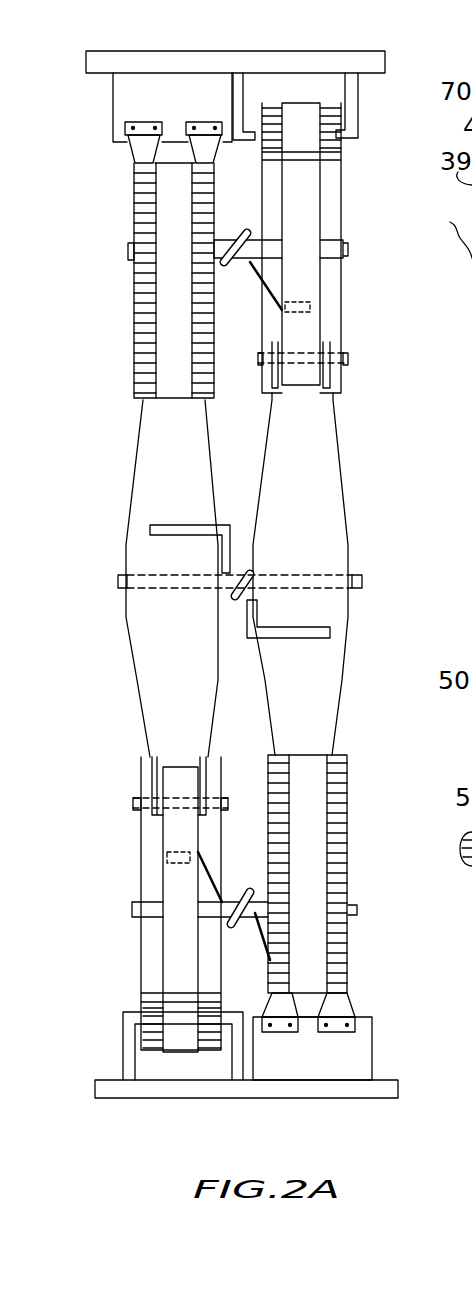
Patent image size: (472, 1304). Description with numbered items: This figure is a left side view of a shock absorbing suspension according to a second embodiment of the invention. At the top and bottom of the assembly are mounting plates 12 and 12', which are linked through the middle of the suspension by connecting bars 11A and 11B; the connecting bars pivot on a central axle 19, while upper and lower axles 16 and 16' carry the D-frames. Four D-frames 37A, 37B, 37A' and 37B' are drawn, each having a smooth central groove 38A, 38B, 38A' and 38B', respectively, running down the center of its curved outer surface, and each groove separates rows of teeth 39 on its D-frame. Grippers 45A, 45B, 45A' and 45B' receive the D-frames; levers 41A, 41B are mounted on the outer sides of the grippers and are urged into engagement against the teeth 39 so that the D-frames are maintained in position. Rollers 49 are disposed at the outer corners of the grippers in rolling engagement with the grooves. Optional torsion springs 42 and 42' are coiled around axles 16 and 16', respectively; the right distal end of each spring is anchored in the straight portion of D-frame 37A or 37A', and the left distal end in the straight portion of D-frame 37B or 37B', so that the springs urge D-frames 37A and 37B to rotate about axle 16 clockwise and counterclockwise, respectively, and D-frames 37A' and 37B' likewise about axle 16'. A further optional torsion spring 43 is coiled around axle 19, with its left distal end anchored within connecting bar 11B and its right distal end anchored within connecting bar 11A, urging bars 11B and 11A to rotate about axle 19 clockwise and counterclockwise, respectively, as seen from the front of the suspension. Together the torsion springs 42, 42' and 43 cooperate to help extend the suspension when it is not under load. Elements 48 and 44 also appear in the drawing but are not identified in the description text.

The mounting plate 12 is at (247, 41).
The mounting plate 12' is at (266, 1102).
The roller 49 is at (176, 140).
The teeth 39 is at (268, 100).
The smooth central groove 38A is at (320, 197).
The smooth central groove 38A' is at (365, 864).
The smooth central groove 38B is at (116, 284).
The smooth central groove 38B' is at (120, 909).
The gripper 45A is at (329, 106).
The gripper 45A' is at (351, 1036).
The gripper 45B is at (136, 107).
The gripper 45B' is at (143, 1046).
The mounting pads 48 is at (123, 127).
The lever 41A is at (197, 150).
The lever 41B is at (140, 148).
The torsion spring 42 is at (267, 235).
The torsion spring 42' is at (218, 897).
The D-frame 37A is at (344, 248).
The D-frame 37A' is at (357, 874).
The D-frame 37B is at (127, 280).
The D-frame 37B' is at (132, 903).
The axle 16 is at (311, 243).
The axle 16' is at (279, 908).
The clamp bracket 44 is at (327, 355).
The connecting bar 11A is at (320, 435).
The connecting bar 11B is at (145, 686).
The torsion spring 43 is at (243, 570).
The axle 19 is at (362, 582).